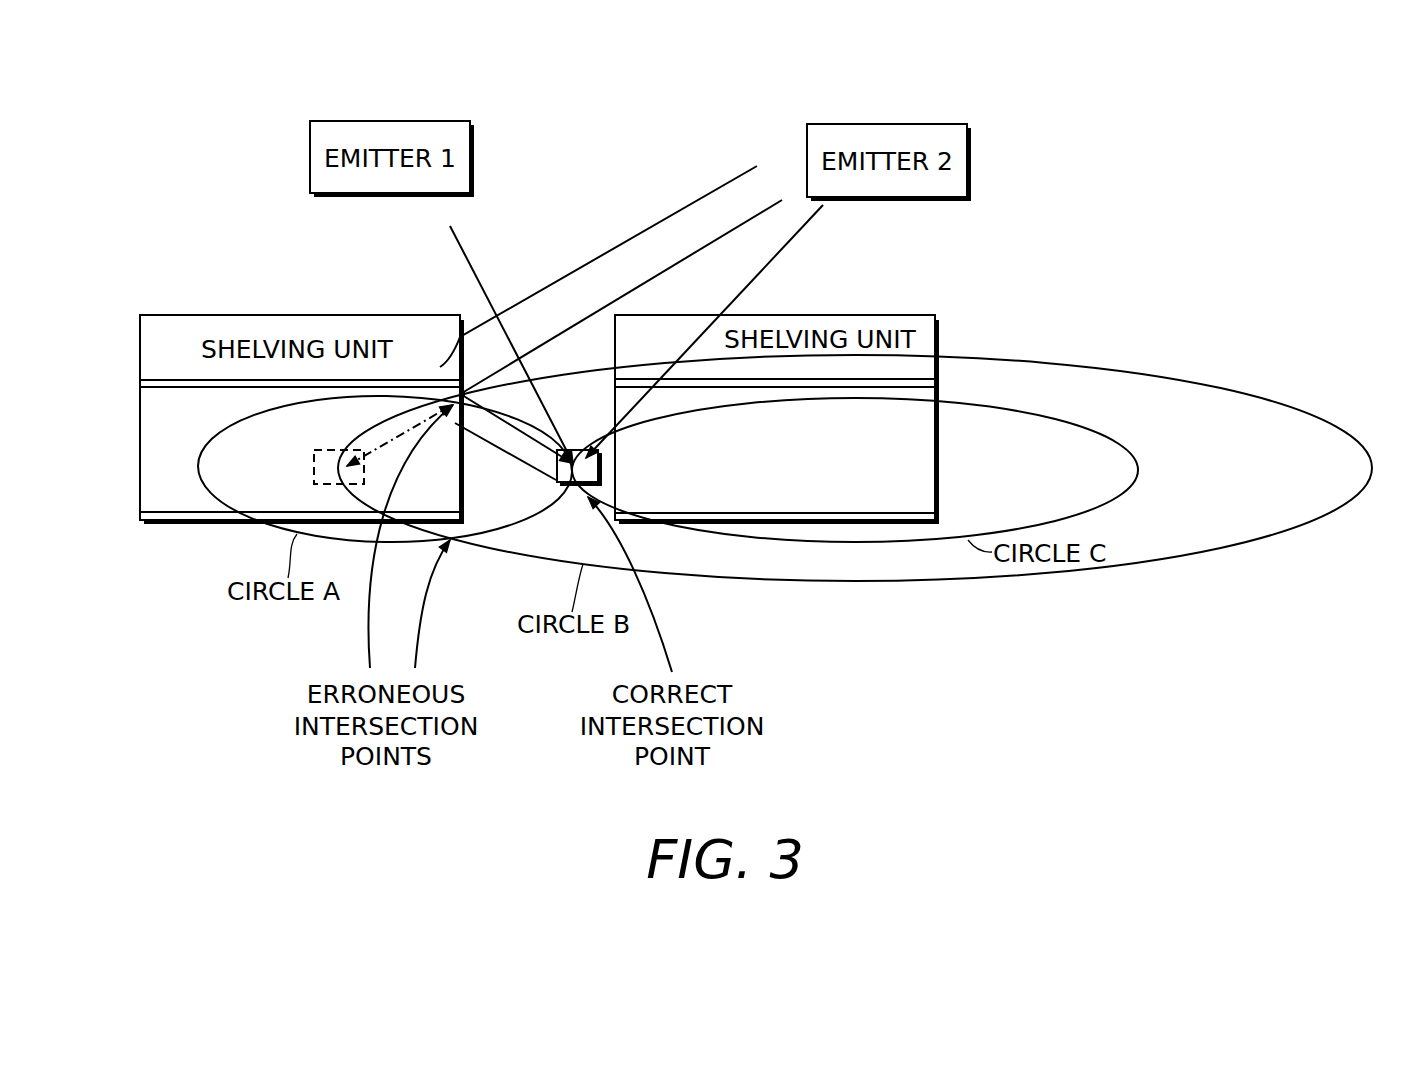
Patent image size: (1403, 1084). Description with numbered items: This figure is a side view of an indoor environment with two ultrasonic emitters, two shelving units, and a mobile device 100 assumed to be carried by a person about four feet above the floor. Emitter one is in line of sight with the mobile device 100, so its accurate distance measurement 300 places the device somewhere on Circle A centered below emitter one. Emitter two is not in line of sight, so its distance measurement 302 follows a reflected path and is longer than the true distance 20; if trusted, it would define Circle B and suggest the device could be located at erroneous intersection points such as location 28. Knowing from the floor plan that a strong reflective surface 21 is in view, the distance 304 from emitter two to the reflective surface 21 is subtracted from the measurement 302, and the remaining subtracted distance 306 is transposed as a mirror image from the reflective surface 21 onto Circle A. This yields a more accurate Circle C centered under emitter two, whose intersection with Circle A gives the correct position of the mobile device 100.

The correct distance 20 is at (755, 280).
The reflective surface 21 is at (464, 392).
The erroneous believed location 28 is at (345, 450).
The mobile device 100 is at (578, 488).
The distance measurement 300 is at (486, 284).
The distance measurement 302 is at (711, 243).
The distance from emitter 2 to reflective surface 304 is at (601, 260).
The subtracted distance 306 is at (520, 458).